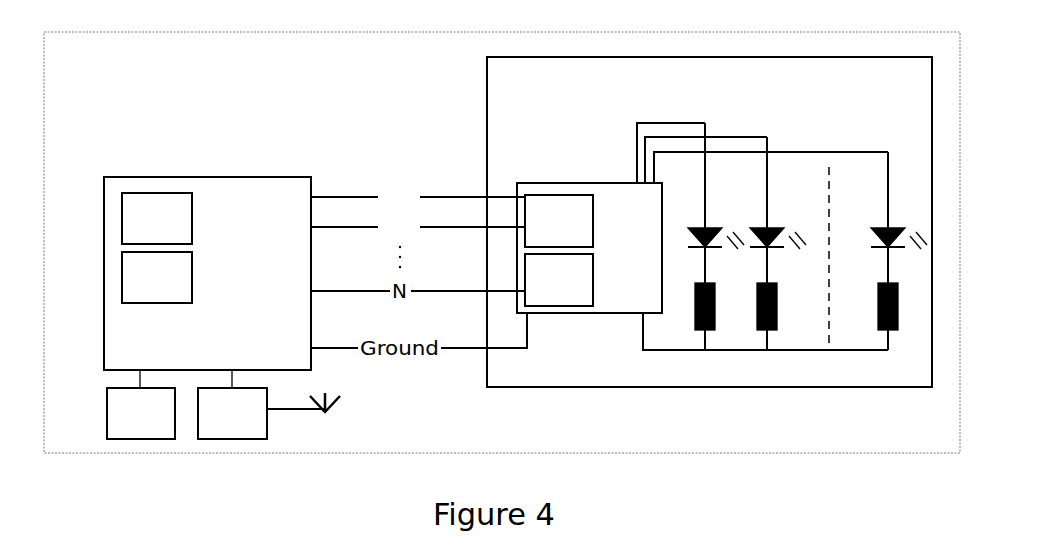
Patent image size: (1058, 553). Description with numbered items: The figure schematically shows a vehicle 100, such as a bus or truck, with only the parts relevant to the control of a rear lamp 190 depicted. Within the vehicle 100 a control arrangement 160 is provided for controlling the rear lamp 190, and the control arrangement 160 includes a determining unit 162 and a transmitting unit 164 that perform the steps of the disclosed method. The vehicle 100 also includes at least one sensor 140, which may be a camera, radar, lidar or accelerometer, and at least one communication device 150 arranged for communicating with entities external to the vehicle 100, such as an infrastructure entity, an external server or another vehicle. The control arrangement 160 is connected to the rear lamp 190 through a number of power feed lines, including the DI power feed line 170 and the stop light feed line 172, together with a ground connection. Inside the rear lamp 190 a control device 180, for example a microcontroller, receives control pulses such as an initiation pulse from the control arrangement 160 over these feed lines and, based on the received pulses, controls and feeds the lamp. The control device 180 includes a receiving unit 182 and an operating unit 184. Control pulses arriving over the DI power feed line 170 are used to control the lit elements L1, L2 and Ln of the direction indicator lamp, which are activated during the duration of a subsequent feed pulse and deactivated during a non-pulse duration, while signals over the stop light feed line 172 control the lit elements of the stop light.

The vehicle 100 is at (398, 76).
The sensor 140 is at (141, 413).
The communication device 150 is at (269, 413).
The control arrangement 160 is at (207, 282).
The determining unit 162 is at (157, 218).
The transmitting unit 164 is at (157, 277).
The DI power feed line 170 is at (418, 197).
The stop light feed line 172 is at (418, 227).
The control device 180 is at (702, 218).
The receiving unit 182 is at (559, 221).
The operating unit 184 is at (559, 280).
The rear lamp 190 is at (709, 222).
The lit element L1 is at (722, 232).
The lit element L2 is at (784, 232).
The lit element Ln is at (905, 232).